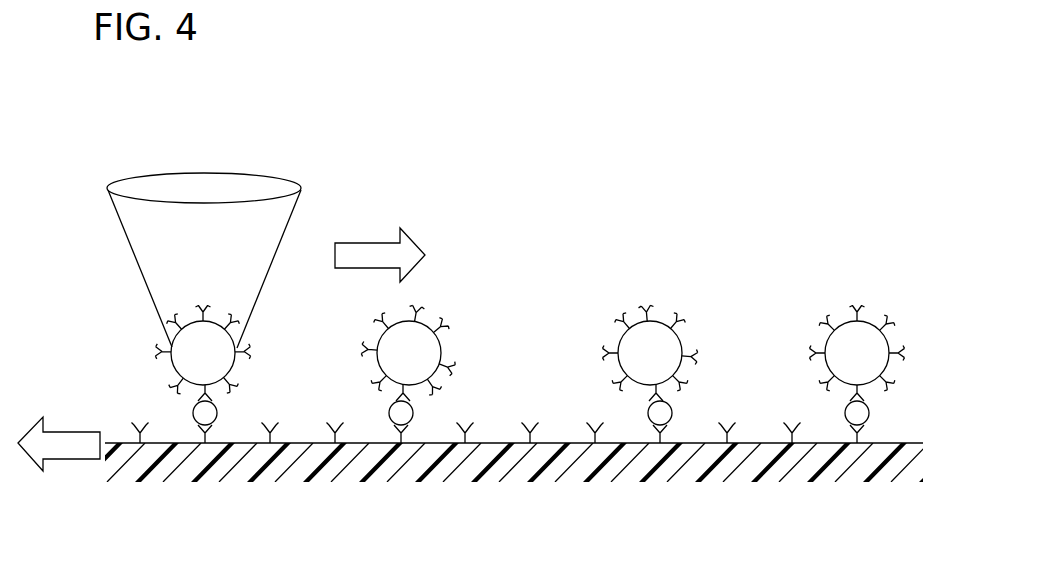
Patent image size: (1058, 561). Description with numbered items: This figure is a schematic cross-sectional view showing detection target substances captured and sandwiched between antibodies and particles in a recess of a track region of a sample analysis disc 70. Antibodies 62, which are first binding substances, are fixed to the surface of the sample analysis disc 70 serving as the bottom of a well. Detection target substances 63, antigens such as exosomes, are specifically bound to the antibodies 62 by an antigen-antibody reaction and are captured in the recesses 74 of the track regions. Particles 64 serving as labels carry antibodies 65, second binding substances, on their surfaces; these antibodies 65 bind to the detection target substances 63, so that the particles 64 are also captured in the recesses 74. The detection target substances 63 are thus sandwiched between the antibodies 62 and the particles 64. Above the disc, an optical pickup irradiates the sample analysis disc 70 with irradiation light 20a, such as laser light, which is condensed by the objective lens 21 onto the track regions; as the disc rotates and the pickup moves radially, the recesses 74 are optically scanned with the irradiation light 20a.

The objective lens 21 is at (140, 186).
The irradiation light 20a is at (140, 268).
The antibodies 62 is at (210, 446).
The detection target substances 63 is at (214, 405).
The particles 64 is at (173, 366).
The antibodies 65 is at (235, 378).
The sample analysis disc 70 is at (760, 483).
The recesses 74 is at (893, 447).